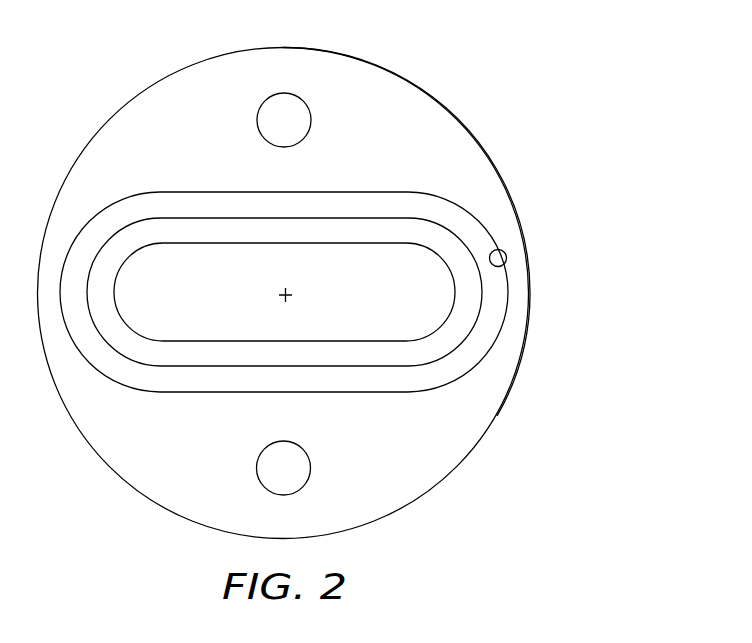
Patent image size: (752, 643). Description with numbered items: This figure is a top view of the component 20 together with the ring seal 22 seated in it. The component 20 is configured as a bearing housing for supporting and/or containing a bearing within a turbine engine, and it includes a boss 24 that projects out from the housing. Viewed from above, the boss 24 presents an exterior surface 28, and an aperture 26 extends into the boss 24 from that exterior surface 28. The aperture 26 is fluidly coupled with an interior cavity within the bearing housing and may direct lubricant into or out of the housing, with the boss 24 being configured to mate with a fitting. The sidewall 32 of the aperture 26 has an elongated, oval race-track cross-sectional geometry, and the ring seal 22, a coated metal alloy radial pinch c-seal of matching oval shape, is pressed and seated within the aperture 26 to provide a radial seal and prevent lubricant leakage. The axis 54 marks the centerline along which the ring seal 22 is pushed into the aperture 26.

The component 20 is at (464, 119).
The ring seal 22 is at (462, 222).
The boss 24 is at (530, 289).
The aperture 26 is at (343, 313).
The exterior surface 28 is at (388, 90).
The sidewall 32 is at (507, 268).
The axis 54 is at (280, 295).